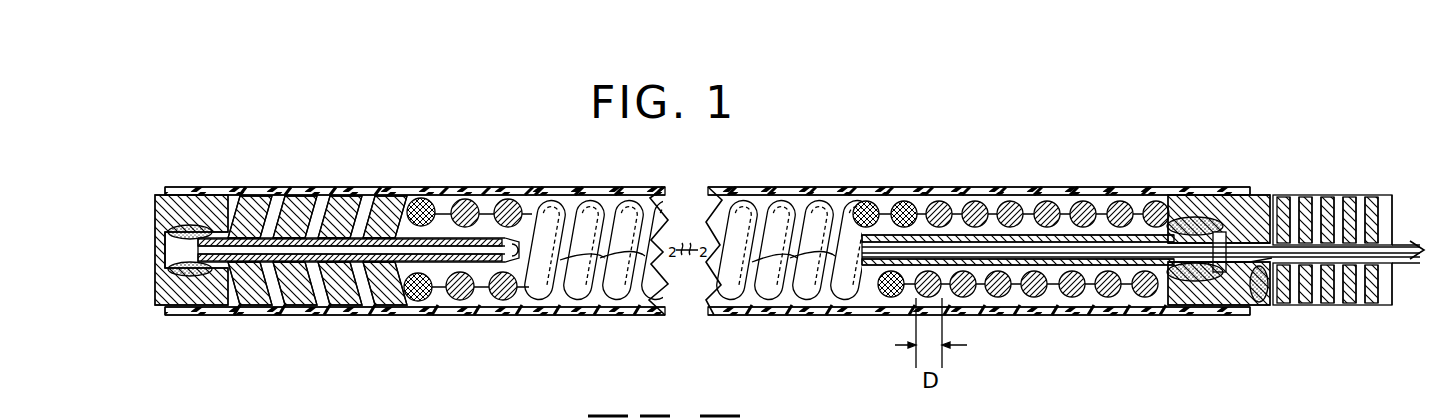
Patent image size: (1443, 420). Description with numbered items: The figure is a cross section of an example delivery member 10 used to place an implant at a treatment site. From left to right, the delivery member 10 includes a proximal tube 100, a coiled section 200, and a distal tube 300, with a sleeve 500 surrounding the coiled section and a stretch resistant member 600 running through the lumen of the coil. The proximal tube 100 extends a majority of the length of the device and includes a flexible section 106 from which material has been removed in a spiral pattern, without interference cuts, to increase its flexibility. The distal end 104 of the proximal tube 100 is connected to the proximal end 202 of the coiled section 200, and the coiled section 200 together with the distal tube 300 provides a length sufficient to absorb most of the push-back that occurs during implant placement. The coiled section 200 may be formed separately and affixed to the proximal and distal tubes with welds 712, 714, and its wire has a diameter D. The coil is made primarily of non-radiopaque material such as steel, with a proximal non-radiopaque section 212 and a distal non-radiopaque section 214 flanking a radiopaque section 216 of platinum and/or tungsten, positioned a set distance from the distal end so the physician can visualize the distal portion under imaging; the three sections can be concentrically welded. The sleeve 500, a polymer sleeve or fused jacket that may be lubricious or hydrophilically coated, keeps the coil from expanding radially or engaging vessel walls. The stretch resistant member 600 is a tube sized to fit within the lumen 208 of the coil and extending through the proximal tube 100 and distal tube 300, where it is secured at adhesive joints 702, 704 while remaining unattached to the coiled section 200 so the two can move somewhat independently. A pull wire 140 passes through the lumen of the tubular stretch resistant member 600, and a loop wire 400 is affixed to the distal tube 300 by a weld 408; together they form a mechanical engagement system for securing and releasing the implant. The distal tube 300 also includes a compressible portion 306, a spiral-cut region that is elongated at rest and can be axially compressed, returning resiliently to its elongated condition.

The delivery member 10 is at (908, 157).
The proximal tube 100 is at (214, 190).
The distal end of proximal tube 104 is at (385, 193).
The flexible section 106 is at (183, 195).
The pull wire 140 is at (262, 253).
The coiled section 200 is at (777, 316).
The proximal end of coiled section 202 is at (457, 193).
The lumen of coil 208 is at (1031, 226).
The proximal non-radiopaque section of coil 212 is at (602, 273).
The distal non-radiopaque section of coil 214 is at (1107, 294).
The radiopaque section 216 is at (903, 202).
The distal tube 300 is at (1244, 318).
The compressible portion 306 is at (1352, 302).
The loop wire 400 is at (1403, 253).
The weld 408 is at (1266, 292).
The sleeve 500 is at (1075, 176).
The stretch resistant member 600 is at (1047, 268).
The adhesive joint 702 is at (157, 273).
The adhesive joint 704 is at (1200, 272).
The weld 712 is at (421, 205).
The weld 714 is at (1172, 207).